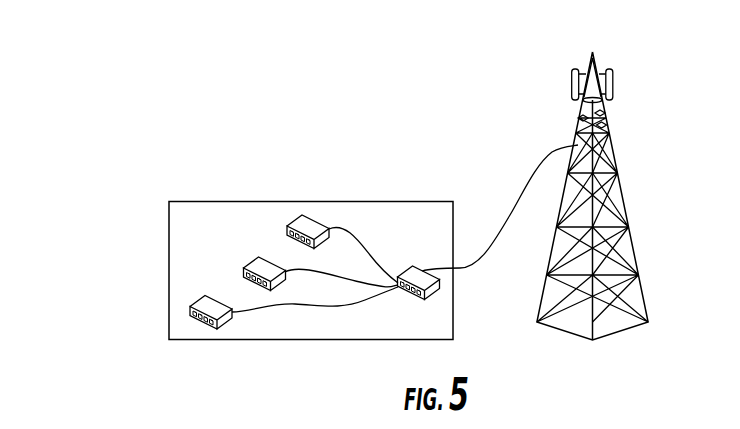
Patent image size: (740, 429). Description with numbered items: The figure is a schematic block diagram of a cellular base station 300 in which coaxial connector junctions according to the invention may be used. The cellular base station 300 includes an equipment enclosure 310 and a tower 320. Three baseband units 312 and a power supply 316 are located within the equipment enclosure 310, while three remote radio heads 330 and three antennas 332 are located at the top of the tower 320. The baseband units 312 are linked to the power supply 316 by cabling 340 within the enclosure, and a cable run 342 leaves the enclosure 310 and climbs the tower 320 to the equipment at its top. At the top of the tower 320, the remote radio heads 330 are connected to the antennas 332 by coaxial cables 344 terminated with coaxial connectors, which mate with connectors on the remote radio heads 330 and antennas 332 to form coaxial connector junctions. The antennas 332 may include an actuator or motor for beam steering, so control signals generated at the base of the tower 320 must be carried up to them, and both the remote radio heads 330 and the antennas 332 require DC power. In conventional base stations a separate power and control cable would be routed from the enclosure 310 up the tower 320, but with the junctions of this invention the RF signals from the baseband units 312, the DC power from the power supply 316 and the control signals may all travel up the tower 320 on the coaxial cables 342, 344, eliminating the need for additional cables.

The cellular base station 300 is at (251, 131).
The equipment enclosure 310 is at (169, 270).
The baseband units 312 is at (258, 286).
The power supply 316 is at (410, 265).
The tower 320 is at (630, 230).
The remote radio heads 330 is at (614, 98).
The antennas 332 is at (572, 72).
The cables 340 is at (290, 303).
The coaxial cables 342 is at (441, 268).
The coaxial cables 344 is at (606, 111).